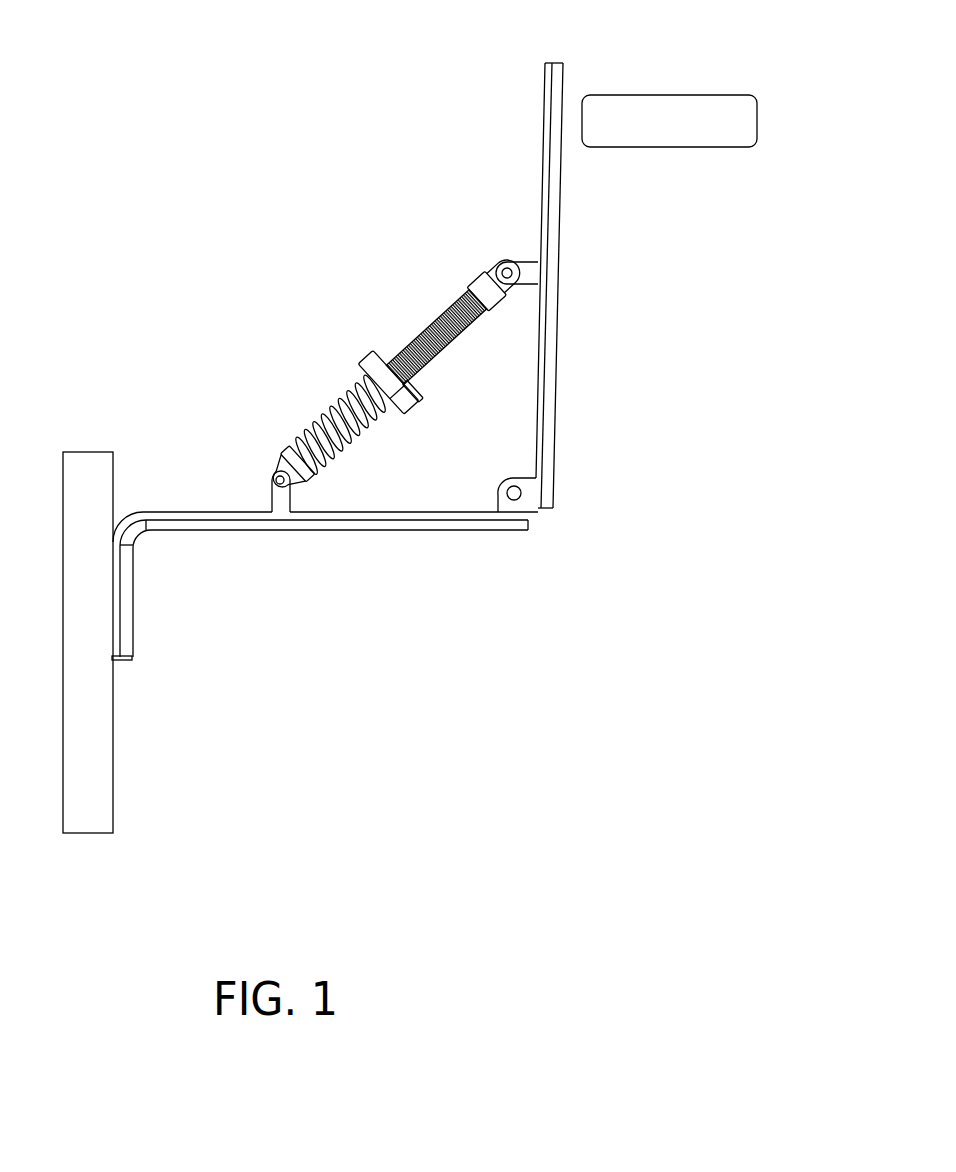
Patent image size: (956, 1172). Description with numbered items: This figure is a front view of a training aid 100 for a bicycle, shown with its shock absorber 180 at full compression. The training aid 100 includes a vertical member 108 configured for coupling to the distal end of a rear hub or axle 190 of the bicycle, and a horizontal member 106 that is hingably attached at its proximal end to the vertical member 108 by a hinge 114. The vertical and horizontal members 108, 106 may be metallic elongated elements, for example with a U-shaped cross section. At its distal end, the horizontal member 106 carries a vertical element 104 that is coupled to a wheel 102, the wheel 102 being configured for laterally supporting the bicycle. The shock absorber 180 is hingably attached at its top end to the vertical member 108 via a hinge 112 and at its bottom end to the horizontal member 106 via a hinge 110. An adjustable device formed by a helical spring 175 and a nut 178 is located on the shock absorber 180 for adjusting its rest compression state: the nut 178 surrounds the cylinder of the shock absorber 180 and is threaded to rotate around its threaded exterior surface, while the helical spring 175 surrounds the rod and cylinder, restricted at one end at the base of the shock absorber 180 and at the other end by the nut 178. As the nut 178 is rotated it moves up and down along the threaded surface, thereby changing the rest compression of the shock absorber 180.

The training aid 100 is at (358, 707).
The wheel 102 is at (95, 833).
The vertical element 104 is at (122, 638).
The horizontal member 106 is at (395, 530).
The vertical member 108 is at (562, 190).
The hinge 110 is at (278, 507).
The hinge 112 is at (522, 273).
The hinge 114 is at (512, 507).
The helical spring 175 is at (307, 430).
The nut 178 is at (375, 348).
The shock absorber 180 is at (407, 288).
The rear hub or axle 190 is at (607, 93).